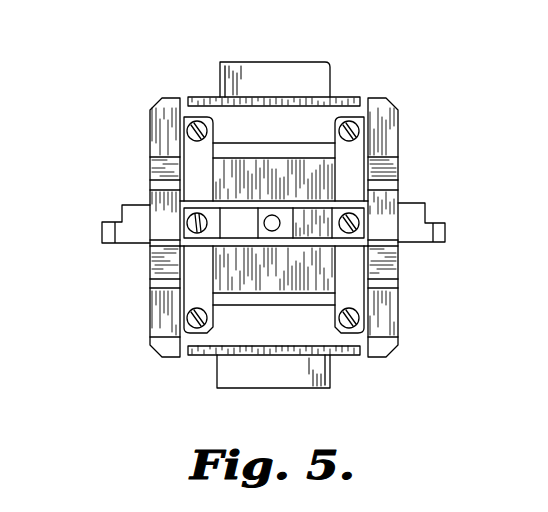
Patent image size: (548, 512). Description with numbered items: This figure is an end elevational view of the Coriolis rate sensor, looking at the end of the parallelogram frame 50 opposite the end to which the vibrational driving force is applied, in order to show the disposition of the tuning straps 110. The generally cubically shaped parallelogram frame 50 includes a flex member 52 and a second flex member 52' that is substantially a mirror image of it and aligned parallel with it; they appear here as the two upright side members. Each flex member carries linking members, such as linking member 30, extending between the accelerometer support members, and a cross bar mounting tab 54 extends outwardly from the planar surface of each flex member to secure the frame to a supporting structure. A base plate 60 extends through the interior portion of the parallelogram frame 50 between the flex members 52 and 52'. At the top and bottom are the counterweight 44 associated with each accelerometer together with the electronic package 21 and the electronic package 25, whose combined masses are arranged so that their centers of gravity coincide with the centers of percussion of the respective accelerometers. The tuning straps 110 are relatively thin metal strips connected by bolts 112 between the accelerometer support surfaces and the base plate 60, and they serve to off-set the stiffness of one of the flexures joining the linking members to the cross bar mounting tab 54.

The electronic package 21 is at (336, 95).
The electronic package 25 is at (333, 356).
The linking member 30 is at (149, 251).
The counterweight 44 is at (279, 63).
The parallelogram frame 50 is at (173, 364).
The flex member 52 is at (140, 227).
The second flex member 52' is at (419, 227).
The cross bar mounting tab 54 is at (103, 231).
The base plate 60 is at (307, 237).
The tuning strap 110 is at (186, 183).
The bolt 112 is at (184, 125).